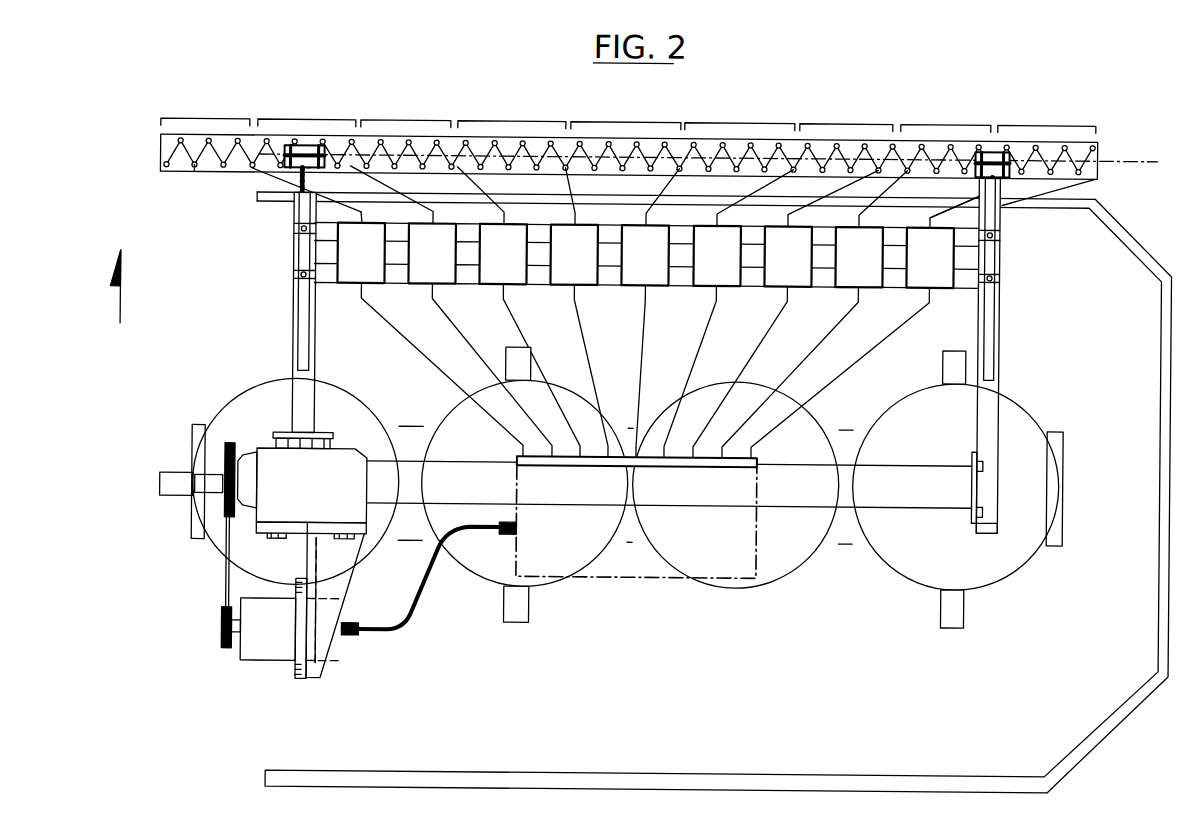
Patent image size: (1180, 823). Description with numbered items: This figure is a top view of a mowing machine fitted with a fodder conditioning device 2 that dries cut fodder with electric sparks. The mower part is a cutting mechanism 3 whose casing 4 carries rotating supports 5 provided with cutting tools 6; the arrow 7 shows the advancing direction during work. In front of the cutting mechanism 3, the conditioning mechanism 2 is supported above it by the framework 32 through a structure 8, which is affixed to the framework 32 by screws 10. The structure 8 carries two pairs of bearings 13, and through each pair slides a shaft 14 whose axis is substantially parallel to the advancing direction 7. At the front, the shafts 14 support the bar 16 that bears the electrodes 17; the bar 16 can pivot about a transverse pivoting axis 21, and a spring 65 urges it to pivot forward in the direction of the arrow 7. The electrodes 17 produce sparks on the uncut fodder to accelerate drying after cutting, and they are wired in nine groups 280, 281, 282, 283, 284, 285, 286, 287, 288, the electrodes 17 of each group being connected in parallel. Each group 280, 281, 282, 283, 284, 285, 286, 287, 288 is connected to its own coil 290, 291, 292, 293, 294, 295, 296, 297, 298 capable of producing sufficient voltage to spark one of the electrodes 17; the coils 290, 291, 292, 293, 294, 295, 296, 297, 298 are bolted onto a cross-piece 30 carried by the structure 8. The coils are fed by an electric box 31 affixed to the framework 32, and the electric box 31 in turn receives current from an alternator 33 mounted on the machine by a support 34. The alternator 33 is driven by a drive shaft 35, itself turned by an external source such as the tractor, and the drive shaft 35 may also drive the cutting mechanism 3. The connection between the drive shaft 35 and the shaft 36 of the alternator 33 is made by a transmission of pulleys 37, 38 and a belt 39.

The fodder conditioning device 2 is at (896, 100).
The cutting mechanism 3 is at (411, 426).
The casing 4 is at (1058, 436).
The rotating supports 5 is at (372, 542).
The cutting tools 6 is at (177, 478).
The arrow 7 is at (118, 304).
The structure 8 is at (291, 309).
The screws 10 is at (320, 440).
The bearings 13 is at (291, 275).
The shaft 14 is at (303, 361).
The bar 16 is at (158, 147).
The electrodes 17 is at (192, 175).
The pivoting axis 21 is at (1143, 155).
The cross-piece 30 is at (970, 283).
The electric box 31 is at (623, 578).
The framework 32 is at (795, 496).
The alternator 33 is at (266, 655).
The support 34 is at (338, 590).
The drive shaft 35 is at (212, 500).
The shaft of the alternator 36 is at (239, 656).
The pulley 37 is at (226, 462).
The pulley 38 is at (224, 628).
The belt 39 is at (226, 581).
The spring 65 is at (290, 208).
The group of electrodes 280 is at (206, 119).
The group of electrodes 281 is at (301, 119).
The group of electrodes 282 is at (412, 119).
The group of electrodes 283 is at (514, 119).
The group of electrodes 284 is at (628, 119).
The group of electrodes 285 is at (738, 119).
The group of electrodes 286 is at (849, 119).
The group of electrodes 287 is at (948, 119).
The group of electrodes 288 is at (1049, 119).
The coil 290 is at (430, 334).
The coil 291 is at (451, 311).
The coil 292 is at (519, 312).
The coil 293 is at (580, 313).
The coil 294 is at (650, 312).
The coil 295 is at (729, 314).
The coil 296 is at (786, 314).
The coil 297 is at (815, 314).
The coil 298 is at (865, 327).